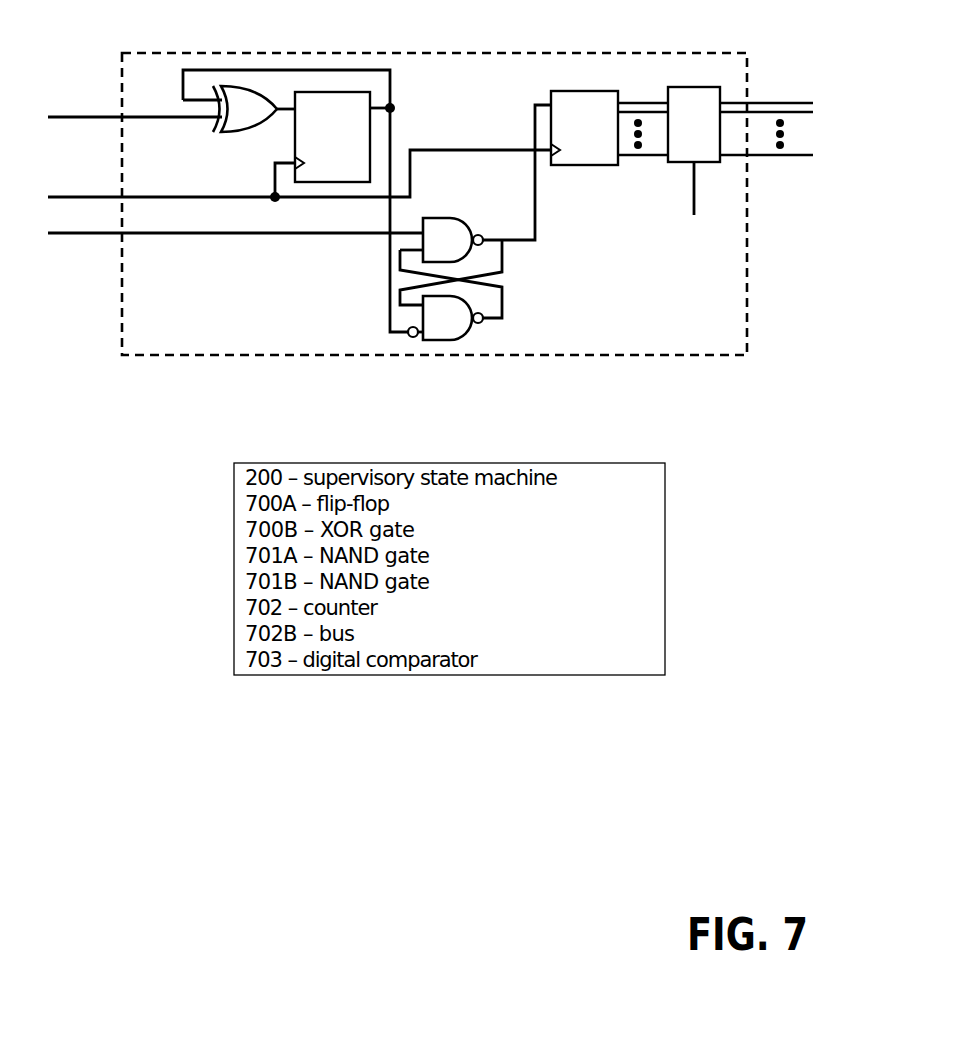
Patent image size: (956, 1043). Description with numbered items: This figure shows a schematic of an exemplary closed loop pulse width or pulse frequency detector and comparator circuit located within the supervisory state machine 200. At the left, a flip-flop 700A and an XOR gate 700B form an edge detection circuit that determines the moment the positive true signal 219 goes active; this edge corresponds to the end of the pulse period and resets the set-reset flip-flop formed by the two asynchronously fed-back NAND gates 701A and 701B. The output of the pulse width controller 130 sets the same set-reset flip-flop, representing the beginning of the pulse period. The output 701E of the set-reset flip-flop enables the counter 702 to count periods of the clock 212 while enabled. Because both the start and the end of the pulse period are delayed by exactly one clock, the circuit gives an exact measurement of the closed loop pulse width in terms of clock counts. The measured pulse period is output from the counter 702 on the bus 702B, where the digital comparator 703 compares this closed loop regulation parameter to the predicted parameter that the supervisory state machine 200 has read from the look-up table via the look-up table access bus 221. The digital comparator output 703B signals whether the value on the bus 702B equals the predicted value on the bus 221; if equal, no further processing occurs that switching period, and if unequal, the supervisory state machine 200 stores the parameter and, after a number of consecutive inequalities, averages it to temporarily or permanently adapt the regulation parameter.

The supervisory state machine 200 is at (298, 53).
The positive true signal 219 is at (50, 116).
The clock 212 is at (54, 193).
The pulse width controller 130 is at (52, 231).
The flip-flop 700A is at (295, 201).
The XOR gate 700B is at (250, 133).
The NAND gate 701A is at (474, 226).
The NAND gate 701B is at (474, 330).
The output of the set-reset flip-flop 701E is at (537, 216).
The counter 702 is at (584, 128).
The bus 702B is at (636, 106).
The digital comparator 703 is at (694, 124).
The digital comparator output 703B is at (691, 215).
The look-up table access bus 221 is at (780, 111).